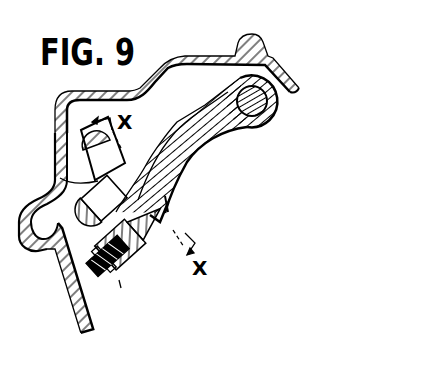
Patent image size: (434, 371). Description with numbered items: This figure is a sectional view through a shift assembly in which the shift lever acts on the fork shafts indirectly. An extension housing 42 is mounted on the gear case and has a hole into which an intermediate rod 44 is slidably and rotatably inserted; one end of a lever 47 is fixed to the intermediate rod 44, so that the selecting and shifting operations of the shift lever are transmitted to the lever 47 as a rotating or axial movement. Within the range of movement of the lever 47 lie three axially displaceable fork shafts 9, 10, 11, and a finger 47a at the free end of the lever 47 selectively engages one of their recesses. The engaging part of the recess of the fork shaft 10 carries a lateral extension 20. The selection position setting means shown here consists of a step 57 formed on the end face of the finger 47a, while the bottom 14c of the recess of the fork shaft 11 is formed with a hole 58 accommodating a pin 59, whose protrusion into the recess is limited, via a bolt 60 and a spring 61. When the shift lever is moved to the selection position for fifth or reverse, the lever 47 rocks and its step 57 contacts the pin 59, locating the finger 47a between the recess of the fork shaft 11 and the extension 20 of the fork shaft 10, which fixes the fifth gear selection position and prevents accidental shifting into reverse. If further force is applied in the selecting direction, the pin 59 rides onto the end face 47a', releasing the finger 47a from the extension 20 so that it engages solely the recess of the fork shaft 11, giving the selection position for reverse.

The extension housing 42 is at (204, 49).
The fork shaft 10 is at (60, 178).
The spring 61 is at (60, 292).
The fork shaft 9 is at (108, 154).
The lateral extension 20 is at (97, 231).
The lever 47 is at (216, 134).
The finger 47a is at (183, 146).
The end face 47a' is at (194, 207).
The intermediate rod 44 is at (256, 121).
The step 57 is at (143, 230).
The bottom 14c is at (142, 240).
The hole 58 is at (110, 276).
The pin 59 is at (125, 272).
The fork shaft 11 is at (121, 288).
The bolt 60 is at (88, 263).